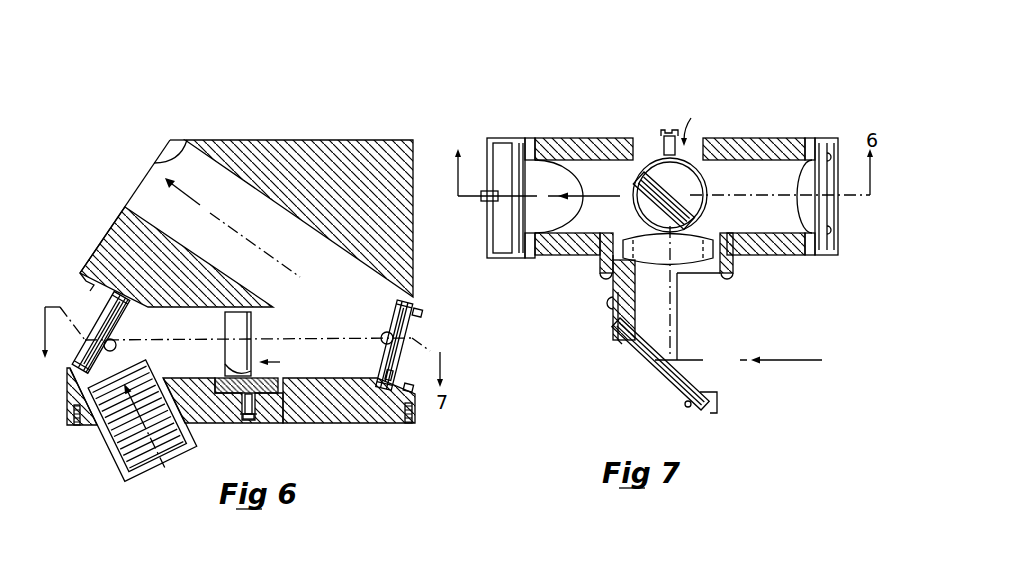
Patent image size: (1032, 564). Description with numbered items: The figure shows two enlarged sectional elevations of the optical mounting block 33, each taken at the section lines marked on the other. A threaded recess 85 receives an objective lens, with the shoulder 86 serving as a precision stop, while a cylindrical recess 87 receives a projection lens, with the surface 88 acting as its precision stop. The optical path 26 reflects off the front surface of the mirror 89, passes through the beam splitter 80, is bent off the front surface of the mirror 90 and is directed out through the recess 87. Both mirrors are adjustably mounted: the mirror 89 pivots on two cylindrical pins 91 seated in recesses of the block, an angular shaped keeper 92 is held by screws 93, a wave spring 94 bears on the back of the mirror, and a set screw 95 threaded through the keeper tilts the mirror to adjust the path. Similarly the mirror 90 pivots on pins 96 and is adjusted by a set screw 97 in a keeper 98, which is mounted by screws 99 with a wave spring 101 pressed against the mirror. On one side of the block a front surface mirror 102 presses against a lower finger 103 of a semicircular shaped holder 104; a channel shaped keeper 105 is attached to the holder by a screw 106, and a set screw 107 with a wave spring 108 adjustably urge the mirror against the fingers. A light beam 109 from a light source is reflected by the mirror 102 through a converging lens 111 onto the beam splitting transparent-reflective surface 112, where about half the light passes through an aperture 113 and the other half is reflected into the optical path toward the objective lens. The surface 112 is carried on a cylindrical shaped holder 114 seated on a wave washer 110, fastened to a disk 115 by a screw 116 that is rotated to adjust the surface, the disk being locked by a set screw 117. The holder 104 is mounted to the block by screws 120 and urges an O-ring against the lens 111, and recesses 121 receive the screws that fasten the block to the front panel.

In FIG. 6, the optical path 26 is at (202, 204).
In FIG. 7, the optical path 26 is at (584, 196).
In FIG. 6, the optical mounting block 33 is at (357, 189).
In FIG. 6, the beam splitter 80 is at (283, 361).
In FIG. 7, the beam splitter 80 is at (695, 123).
In FIG. 6, the threaded recess 85 is at (137, 467).
In FIG. 6, the shoulder 86 is at (203, 446).
In FIG. 6, the cylindrical recess 87 is at (178, 158).
In FIG. 6, the surface 88 is at (125, 213).
In FIG. 6, the mirror 89 is at (118, 314).
In FIG. 6, the mirror 90 is at (398, 313).
In FIG. 7, the mirror 90 is at (807, 168).
In FIG. 6, the cylindrical pins 91 is at (111, 352).
In FIG. 7, the cylindrical pins 91 is at (532, 138).
In FIG. 6, the angular shaped keeper 92 is at (108, 302).
In FIG. 7, the angular shaped keeper 92 is at (499, 147).
In FIG. 6, the screws 93 is at (90, 285).
In FIG. 6, the wave spring 94 is at (130, 307).
In FIG. 6, the set screw 95 is at (77, 358).
In FIG. 7, the set screw 95 is at (487, 192).
In FIG. 6, the pins 96 is at (381, 335).
In FIG. 7, the pins 96 is at (811, 140).
In FIG. 6, the set screw 97 is at (423, 315).
In FIG. 6, the keeper 98 is at (403, 336).
In FIG. 6, the screws 99 is at (415, 386).
In FIG. 6, the wave spring 101 is at (389, 372).
In FIG. 7, the front surface mirror 102 is at (704, 388).
In FIG. 7, the lower finger 103 is at (738, 360).
In FIG. 7, the semicircular shaped holder 104 is at (645, 302).
In FIG. 7, the channel shaped keeper 105 is at (654, 369).
In FIG. 7, the screw 106 is at (607, 305).
In FIG. 7, the set screw 107 is at (686, 406).
In FIG. 7, the wave spring 108 is at (623, 344).
In FIG. 7, the light beam 109 is at (552, 192).
In FIG. 6, the wave washer 110 is at (280, 408).
In FIG. 7, the converging lens 111 is at (685, 262).
In FIG. 6, the beam splitting transparent-reflective surface 112 is at (246, 326).
In FIG. 7, the beam splitting transparent-reflective surface 112 is at (637, 191).
In FIG. 7, the aperture 113 is at (633, 155).
In FIG. 6, the cylindrical shaped holder 114 is at (222, 378).
In FIG. 7, the cylindrical shaped holder 114 is at (690, 179).
In FIG. 6, the disk 115 is at (268, 424).
In FIG. 6, the screw 116 is at (250, 419).
In FIG. 7, the set screw 117 is at (669, 130).
In FIG. 7, the screws 120 is at (603, 280).
In FIG. 6, the recesses 121 is at (76, 428).